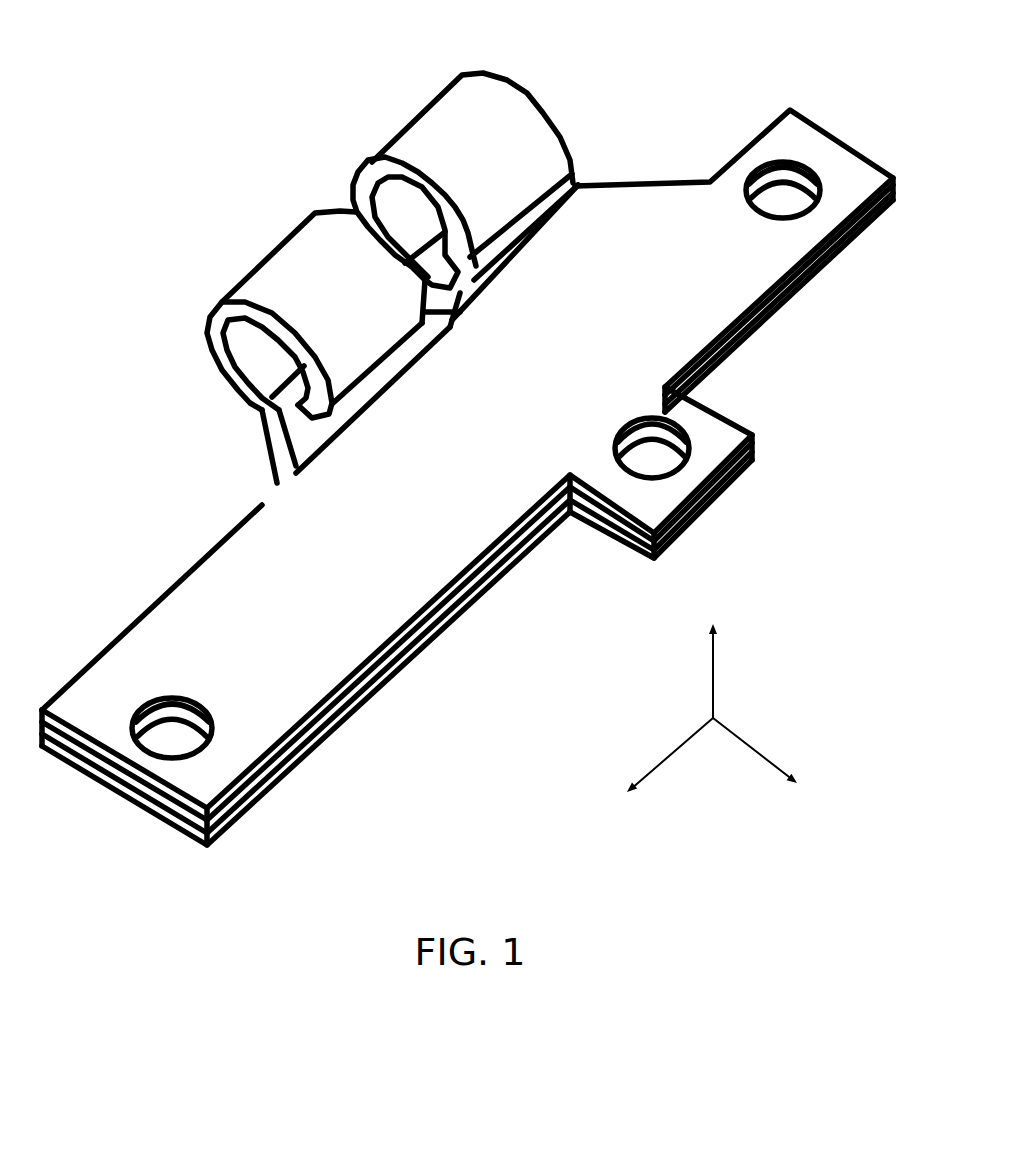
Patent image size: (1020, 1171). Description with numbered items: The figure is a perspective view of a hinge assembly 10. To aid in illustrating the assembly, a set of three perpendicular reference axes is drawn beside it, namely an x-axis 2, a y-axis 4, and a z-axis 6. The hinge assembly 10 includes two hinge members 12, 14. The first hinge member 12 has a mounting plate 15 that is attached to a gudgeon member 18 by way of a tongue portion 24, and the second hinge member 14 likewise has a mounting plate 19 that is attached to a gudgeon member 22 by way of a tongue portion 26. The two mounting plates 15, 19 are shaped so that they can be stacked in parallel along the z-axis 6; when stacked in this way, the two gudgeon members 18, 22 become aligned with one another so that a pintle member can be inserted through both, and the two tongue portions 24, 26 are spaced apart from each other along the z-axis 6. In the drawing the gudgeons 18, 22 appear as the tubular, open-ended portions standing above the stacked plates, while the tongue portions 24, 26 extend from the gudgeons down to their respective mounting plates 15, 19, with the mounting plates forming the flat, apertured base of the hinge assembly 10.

The hinge assembly 10 is at (148, 167).
The hinge member 12 is at (440, 615).
The hinge member 14 is at (385, 678).
The mounting plate 15 is at (500, 410).
The mounting plate 19 is at (522, 560).
The gudgeon member 18 is at (420, 107).
The gudgeon member 22 is at (258, 258).
The tongue portion 24 is at (525, 258).
The tongue portion 26 is at (300, 447).
The x-axis 2 is at (665, 755).
The y-axis 4 is at (762, 752).
The z-axis 6 is at (715, 657).